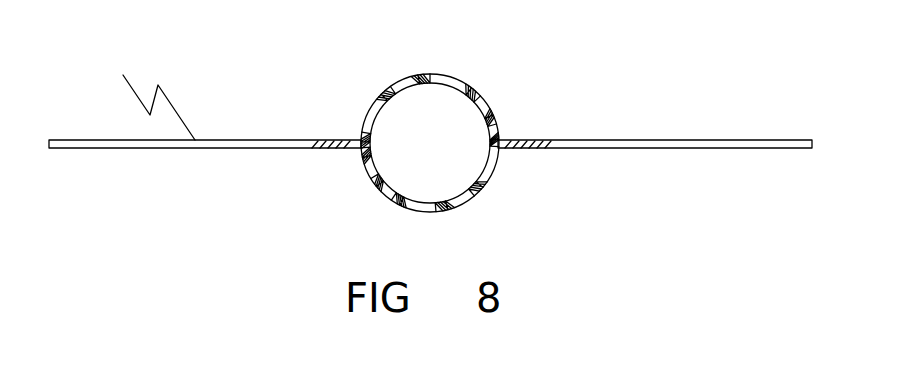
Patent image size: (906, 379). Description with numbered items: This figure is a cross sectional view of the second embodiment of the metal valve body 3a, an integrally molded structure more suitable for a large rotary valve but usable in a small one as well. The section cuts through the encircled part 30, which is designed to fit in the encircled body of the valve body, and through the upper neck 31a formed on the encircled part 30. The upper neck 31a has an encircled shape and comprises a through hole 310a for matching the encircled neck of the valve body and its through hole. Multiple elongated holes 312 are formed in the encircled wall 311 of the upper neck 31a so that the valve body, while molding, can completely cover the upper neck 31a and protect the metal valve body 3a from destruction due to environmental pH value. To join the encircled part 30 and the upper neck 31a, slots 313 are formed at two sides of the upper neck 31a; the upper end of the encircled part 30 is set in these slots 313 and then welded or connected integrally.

The metal valve body 3a is at (152, 96).
The encircled part 30 is at (147, 147).
The upper neck 31a is at (417, 112).
The through hole 310a is at (445, 113).
The encircled wall 311 is at (498, 128).
The elongated holes 312 is at (425, 64).
The slots 313 is at (356, 164).